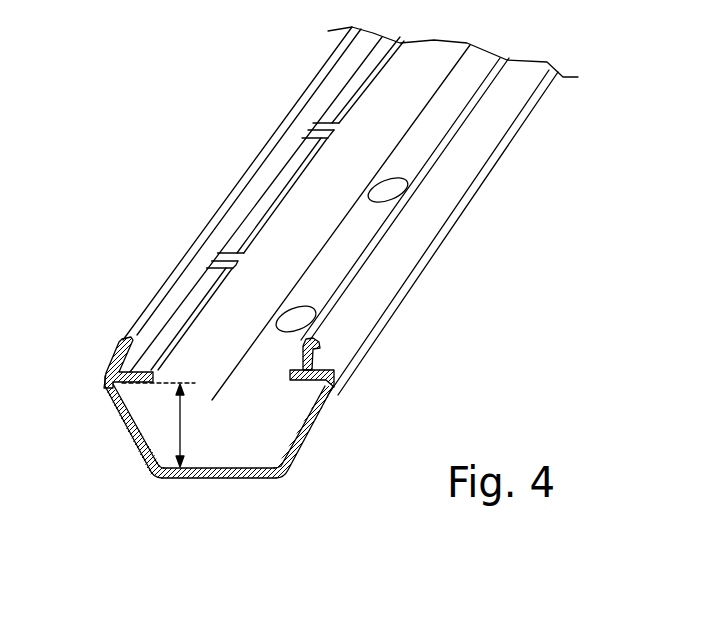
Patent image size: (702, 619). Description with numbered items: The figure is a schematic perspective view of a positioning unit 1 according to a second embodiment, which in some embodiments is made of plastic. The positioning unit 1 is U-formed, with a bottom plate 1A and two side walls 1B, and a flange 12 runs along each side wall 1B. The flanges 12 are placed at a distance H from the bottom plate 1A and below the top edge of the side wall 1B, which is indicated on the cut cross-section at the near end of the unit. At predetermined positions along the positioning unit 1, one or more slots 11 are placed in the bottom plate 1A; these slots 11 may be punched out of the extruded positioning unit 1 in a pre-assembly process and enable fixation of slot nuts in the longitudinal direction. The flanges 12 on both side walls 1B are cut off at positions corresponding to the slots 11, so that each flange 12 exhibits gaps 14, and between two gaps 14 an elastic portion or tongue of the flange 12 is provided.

The positioning unit 1 is at (142, 108).
The bottom plate 1A is at (222, 470).
The side wall 1B is at (351, 350).
The slot 11 is at (395, 191).
The flange 12 is at (338, 68).
The gap 14 is at (292, 122).
The distance H is at (164, 425).